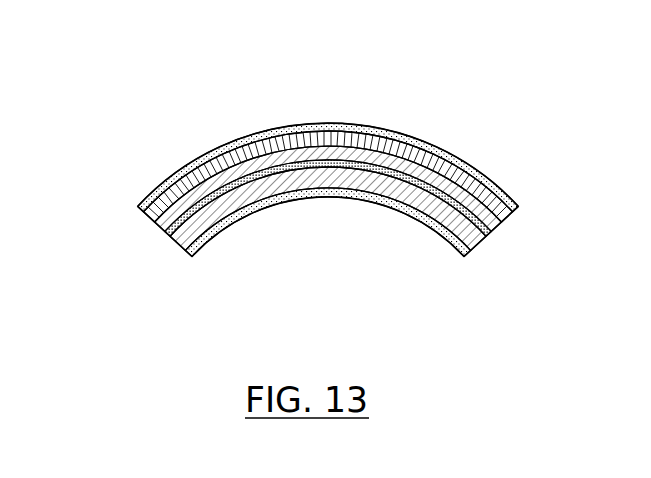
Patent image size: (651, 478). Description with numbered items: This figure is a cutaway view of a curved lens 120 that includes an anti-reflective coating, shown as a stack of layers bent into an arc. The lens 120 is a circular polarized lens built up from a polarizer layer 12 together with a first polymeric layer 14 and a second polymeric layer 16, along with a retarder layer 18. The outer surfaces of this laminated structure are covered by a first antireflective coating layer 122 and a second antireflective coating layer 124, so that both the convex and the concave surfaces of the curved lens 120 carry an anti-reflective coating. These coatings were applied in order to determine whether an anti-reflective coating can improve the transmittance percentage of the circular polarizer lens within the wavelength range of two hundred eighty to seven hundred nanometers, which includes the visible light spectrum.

The lens 120 is at (126, 132).
The first antireflective coating layer 122 is at (497, 187).
The retarder layer 18 is at (512, 213).
The second polymeric layer 16 is at (158, 225).
The polarizer layer 12 is at (164, 231).
The first polymeric layer 14 is at (171, 236).
The second antireflective coating layer 124 is at (448, 233).